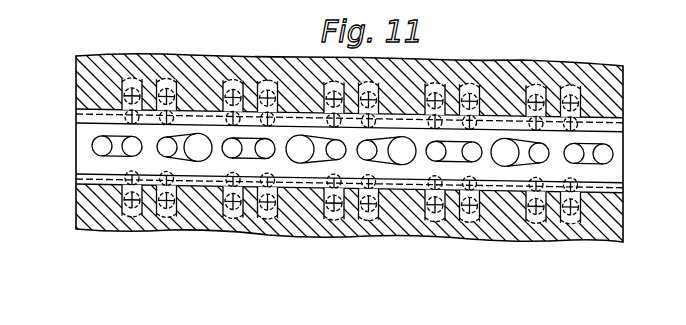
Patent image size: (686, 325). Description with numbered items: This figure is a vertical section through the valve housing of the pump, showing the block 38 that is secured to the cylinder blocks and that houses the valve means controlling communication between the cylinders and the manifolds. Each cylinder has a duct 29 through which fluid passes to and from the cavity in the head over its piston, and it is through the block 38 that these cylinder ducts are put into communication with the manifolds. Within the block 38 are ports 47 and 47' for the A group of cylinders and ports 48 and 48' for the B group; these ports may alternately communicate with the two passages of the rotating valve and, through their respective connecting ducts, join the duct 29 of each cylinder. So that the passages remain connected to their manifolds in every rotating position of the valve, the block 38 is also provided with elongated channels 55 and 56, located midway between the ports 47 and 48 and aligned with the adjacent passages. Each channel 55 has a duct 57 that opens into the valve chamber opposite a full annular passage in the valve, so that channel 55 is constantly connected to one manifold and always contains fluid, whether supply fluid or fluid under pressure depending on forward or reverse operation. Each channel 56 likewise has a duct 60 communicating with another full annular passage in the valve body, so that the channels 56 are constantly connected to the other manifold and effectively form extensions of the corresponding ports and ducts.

The duct 29 is at (166, 72).
The block 38 is at (88, 160).
The port 47 is at (351, 120).
The port 48 is at (351, 170).
The port 47' is at (338, 143).
The port 48' is at (366, 162).
The elongated channel 55 is at (185, 132).
The elongated channel 56 is at (117, 141).
The duct 57 is at (640, 151).
The duct 60 is at (55, 136).